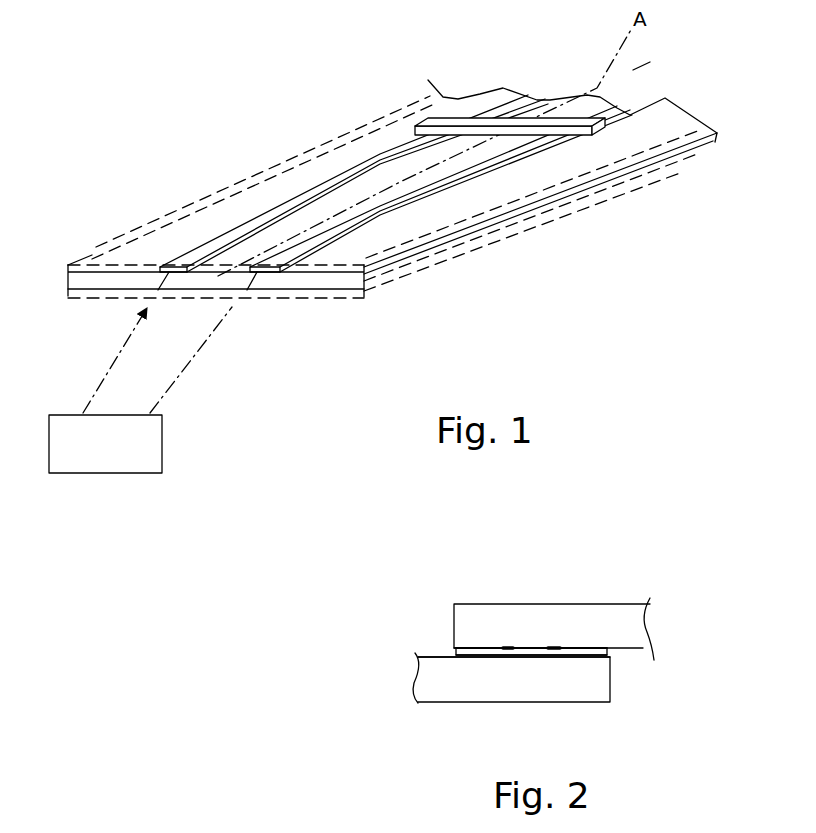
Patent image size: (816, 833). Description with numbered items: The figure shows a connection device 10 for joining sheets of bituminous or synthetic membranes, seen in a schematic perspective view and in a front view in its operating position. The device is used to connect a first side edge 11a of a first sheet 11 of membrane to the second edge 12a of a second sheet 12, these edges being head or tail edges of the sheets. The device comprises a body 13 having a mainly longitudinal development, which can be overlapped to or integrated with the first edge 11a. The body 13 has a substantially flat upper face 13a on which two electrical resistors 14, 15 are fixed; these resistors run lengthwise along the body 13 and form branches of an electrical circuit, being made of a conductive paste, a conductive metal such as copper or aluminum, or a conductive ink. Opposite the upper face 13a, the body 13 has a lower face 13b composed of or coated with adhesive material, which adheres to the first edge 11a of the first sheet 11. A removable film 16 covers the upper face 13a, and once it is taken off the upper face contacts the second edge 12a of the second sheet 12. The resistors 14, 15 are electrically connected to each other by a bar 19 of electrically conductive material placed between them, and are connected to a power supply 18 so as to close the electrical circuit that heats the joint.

In FIG. 1, the connection device 10 is at (678, 47).
In FIG. 2, the connection device 10 is at (563, 662).
In FIG. 2, the first sheet 11 is at (445, 705).
In FIG. 2, the first side edge 11a is at (603, 678).
In FIG. 2, the second sheet 12 is at (632, 598).
In FIG. 2, the second edge 12a is at (463, 628).
In FIG. 1, the body 13 is at (519, 209).
In FIG. 2, the body 13 is at (585, 652).
In FIG. 1, the upper face 13a is at (225, 213).
In FIG. 2, the upper face 13a is at (482, 648).
In FIG. 1, the lower face 13b is at (303, 290).
In FIG. 2, the lower face 13b is at (528, 660).
In FIG. 1, the electrical resistor 14 is at (317, 197).
In FIG. 2, the electrical resistor 14 is at (507, 646).
In FIG. 1, the electrical resistor 15 is at (387, 210).
In FIG. 2, the electrical resistor 15 is at (553, 647).
In FIG. 1, the film 16 is at (115, 242).
In FIG. 1, the power supply 18 is at (107, 462).
In FIG. 1, the bar 19 is at (497, 126).